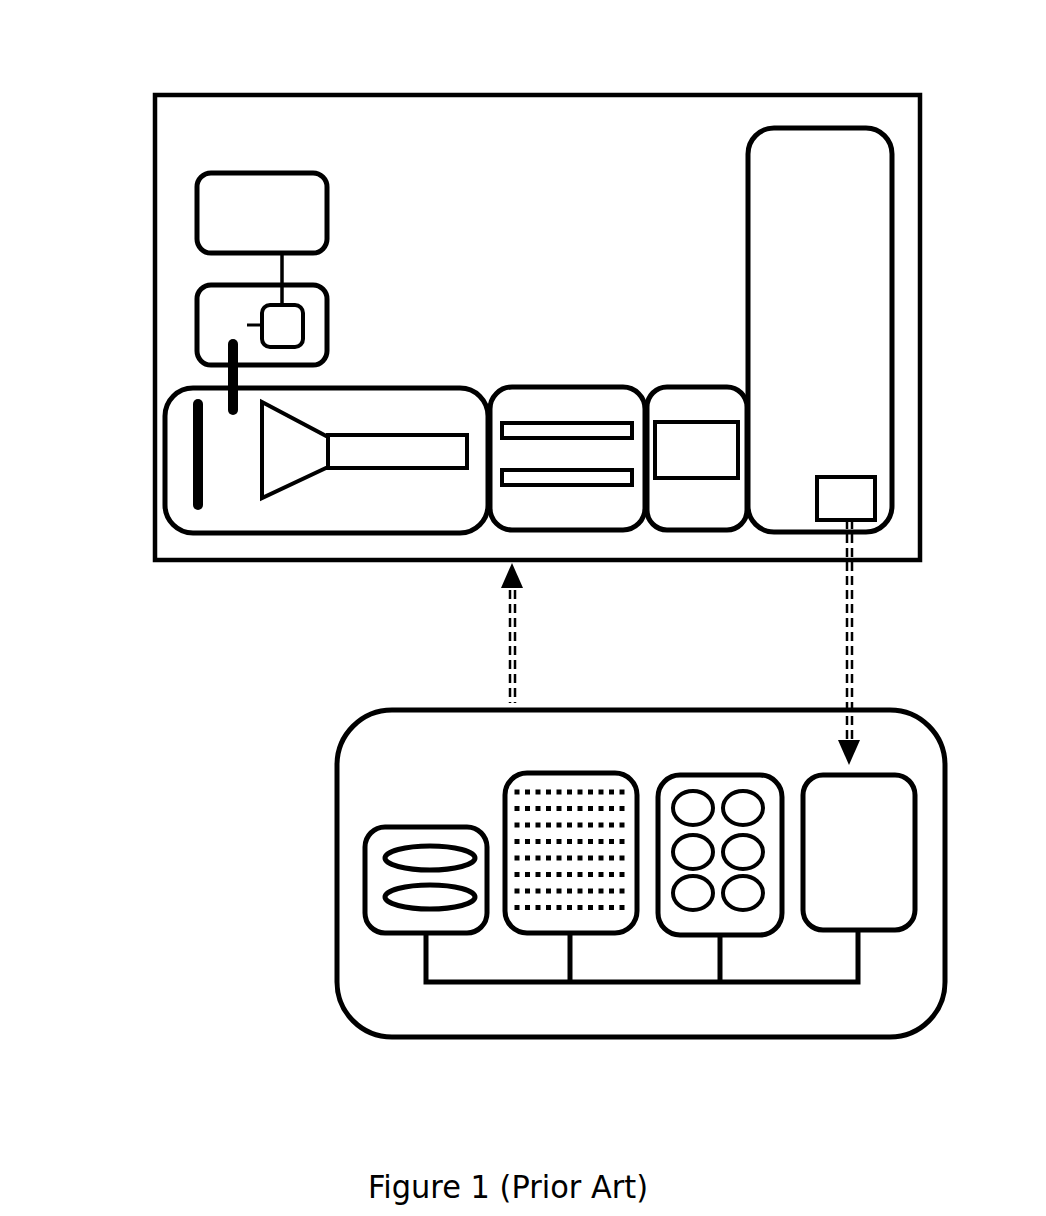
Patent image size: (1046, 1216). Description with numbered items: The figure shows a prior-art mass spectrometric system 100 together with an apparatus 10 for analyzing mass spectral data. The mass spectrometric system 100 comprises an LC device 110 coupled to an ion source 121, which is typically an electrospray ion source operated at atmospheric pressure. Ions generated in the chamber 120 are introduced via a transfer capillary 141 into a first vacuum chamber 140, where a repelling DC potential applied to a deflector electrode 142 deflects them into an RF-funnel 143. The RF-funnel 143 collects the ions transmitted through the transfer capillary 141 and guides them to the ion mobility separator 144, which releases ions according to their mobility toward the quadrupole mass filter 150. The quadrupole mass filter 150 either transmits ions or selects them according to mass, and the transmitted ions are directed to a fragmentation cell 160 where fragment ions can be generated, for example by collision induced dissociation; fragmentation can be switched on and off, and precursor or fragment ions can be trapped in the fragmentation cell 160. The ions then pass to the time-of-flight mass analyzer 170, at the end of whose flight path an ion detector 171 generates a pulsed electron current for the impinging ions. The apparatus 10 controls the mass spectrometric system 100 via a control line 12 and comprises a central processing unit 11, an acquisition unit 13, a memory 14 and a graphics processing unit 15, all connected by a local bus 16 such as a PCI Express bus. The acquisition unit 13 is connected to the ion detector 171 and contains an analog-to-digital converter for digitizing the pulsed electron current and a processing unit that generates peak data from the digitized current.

The mass spectrometric system 100 is at (238, 68).
The LC device 110 is at (172, 213).
The chamber 120 is at (172, 319).
The ion source 121 is at (320, 325).
The first vacuum chamber 140 is at (446, 369).
The transfer capillary 141 is at (202, 371).
The deflector electrode 142 is at (176, 453).
The RF-funnel 143 is at (288, 508).
The ion mobility separator 144 is at (385, 490).
The quadrupole mass filter 150 is at (572, 369).
The fragmentation cell 160 is at (695, 369).
The time-of-flight mass analyzer 170 is at (728, 213).
The ion detector 171 is at (849, 487).
The control line 12 is at (532, 633).
The apparatus 10 is at (308, 781).
The central processing unit 11 is at (426, 861).
The memory 14 is at (571, 829).
The graphics processing unit 15 is at (720, 835).
The acquisition unit 13 is at (859, 852).
The local bus 16 is at (642, 977).